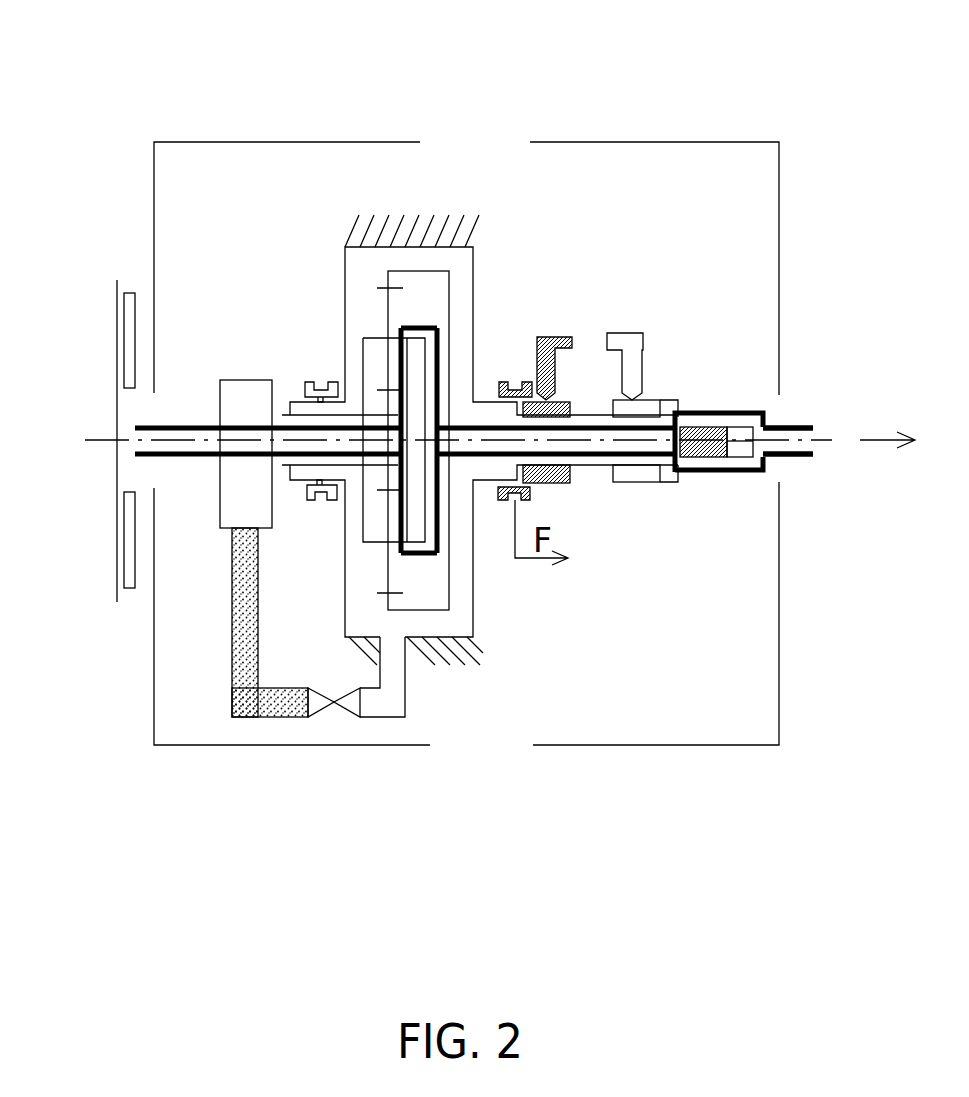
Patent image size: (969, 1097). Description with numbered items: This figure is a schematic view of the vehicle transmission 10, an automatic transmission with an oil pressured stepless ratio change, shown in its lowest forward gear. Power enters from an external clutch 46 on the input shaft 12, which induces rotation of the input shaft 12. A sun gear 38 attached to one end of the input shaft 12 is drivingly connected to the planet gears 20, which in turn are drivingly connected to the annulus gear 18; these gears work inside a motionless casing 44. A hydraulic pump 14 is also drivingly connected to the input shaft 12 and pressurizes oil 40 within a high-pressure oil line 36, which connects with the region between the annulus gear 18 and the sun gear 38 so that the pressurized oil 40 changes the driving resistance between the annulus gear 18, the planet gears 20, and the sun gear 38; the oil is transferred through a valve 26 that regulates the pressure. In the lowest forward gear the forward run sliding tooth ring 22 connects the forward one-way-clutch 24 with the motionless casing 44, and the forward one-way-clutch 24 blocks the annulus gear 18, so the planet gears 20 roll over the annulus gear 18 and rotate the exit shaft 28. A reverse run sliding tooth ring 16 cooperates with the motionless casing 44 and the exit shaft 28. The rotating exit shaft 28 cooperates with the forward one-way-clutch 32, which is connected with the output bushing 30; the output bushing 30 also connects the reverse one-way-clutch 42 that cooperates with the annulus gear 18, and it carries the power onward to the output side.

The vehicle transmission 10 is at (260, 100).
The input shaft 12 is at (155, 425).
The hydraulic pump 14 is at (220, 405).
The reverse run sliding tooth ring 16 is at (310, 383).
The annulus gear 18 is at (395, 272).
The planet gears 20 is at (390, 309).
The forward run sliding tooth ring 22 is at (508, 382).
The forward one-way-clutch 24 is at (553, 483).
The valve 26 is at (332, 702).
The exit shaft 28 is at (635, 443).
The output bushing 30 is at (803, 458).
The forward one-way-clutch 32 is at (705, 452).
The high-pressure oil line 36 is at (262, 717).
The sun gear 38 is at (388, 474).
The oil 40 is at (242, 642).
The reverse one-way-clutch 42 is at (650, 408).
The motionless casing 44 is at (463, 222).
The external clutch 46 is at (117, 317).